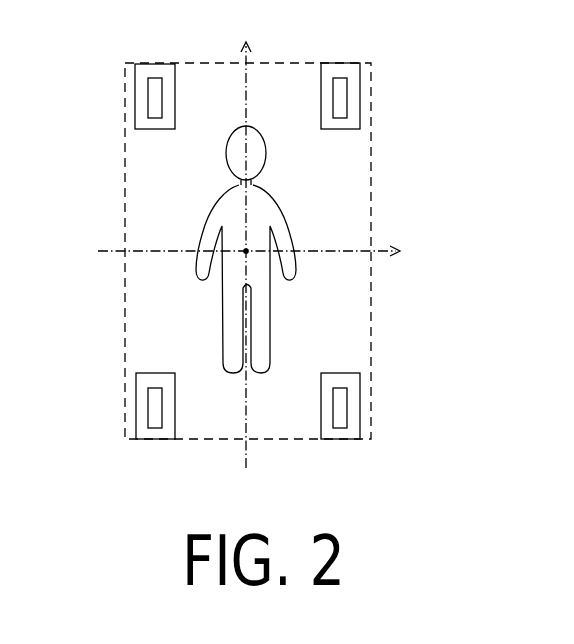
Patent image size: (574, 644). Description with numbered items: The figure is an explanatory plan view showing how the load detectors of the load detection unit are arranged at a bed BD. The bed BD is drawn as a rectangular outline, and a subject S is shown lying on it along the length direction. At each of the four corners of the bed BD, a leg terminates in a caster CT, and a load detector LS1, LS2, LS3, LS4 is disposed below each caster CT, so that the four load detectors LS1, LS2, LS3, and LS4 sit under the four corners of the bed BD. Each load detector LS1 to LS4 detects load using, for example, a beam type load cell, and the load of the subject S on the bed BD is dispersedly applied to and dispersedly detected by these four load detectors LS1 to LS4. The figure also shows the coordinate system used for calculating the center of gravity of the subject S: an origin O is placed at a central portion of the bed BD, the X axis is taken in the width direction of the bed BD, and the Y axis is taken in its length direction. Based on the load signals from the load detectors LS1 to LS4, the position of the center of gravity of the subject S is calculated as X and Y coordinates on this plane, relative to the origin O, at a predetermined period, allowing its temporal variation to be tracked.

The bed BD is at (409, 340).
The subject S is at (280, 212).
The origin O is at (250, 249).
The X coordinate X is at (267, 253).
The Y coordinate Y is at (244, 234).
The load detector LS1 is at (352, 388).
The load detector LS2 is at (145, 384).
The load detector LS3 is at (143, 120).
The load detector LS4 is at (353, 118).
The caster CT is at (153, 91).